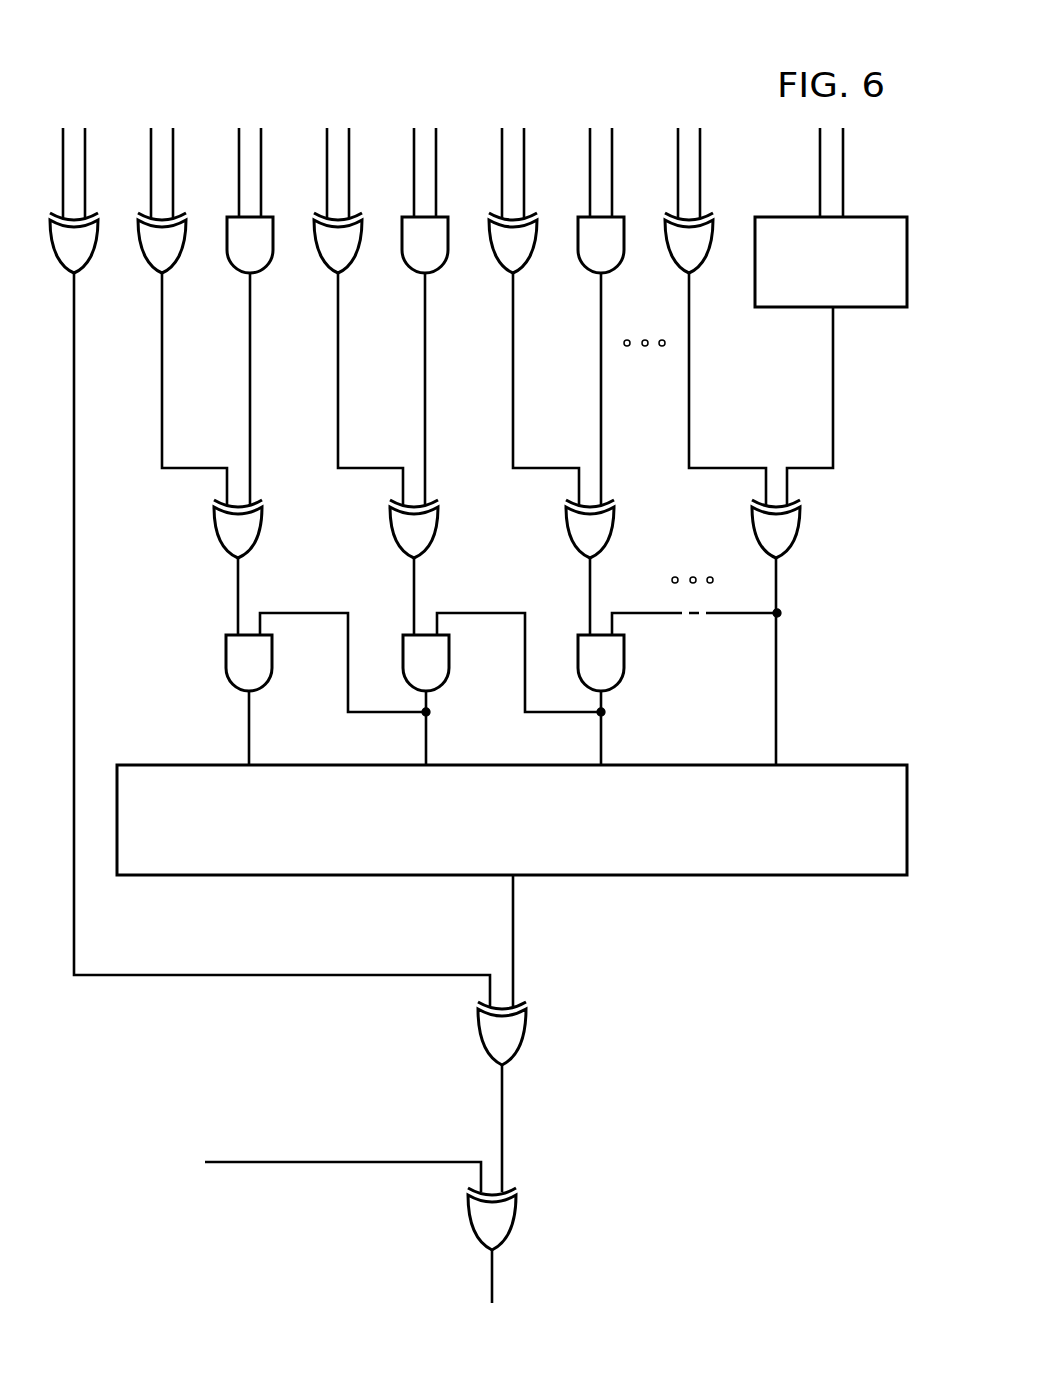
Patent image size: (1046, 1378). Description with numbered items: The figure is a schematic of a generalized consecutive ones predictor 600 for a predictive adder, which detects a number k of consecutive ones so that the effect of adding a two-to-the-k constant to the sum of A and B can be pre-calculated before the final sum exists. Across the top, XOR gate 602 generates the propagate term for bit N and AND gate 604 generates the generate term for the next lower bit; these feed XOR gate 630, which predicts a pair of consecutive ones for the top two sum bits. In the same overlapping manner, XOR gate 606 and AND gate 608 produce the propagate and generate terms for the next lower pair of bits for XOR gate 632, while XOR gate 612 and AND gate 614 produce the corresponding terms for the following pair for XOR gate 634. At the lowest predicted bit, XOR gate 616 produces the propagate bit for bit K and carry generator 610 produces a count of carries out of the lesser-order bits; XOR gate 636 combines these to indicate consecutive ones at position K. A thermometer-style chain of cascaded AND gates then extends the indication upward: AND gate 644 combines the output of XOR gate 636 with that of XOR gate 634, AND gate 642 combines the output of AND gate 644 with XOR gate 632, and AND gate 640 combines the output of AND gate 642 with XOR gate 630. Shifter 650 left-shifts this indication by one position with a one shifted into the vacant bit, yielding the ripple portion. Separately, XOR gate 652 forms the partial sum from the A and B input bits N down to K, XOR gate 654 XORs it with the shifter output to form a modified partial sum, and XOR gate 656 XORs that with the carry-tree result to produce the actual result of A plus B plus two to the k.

The generalized consecutive ones predictor 600 is at (257, 93).
The XOR gate 602 is at (139, 262).
The AND gate 604 is at (228, 262).
The XOR gate 606 is at (316, 262).
The AND gate 608 is at (447, 262).
The carry generator 610 is at (863, 308).
The XOR gate 612 is at (536, 262).
The AND gate 614 is at (623, 262).
The XOR gate 616 is at (711, 262).
The XOR gate 630 is at (214, 526).
The XOR gate 632 is at (390, 526).
The XOR gate 634 is at (614, 526).
The XOR gate 636 is at (800, 526).
The AND gate 640 is at (227, 680).
The AND gate 642 is at (448, 680).
The AND gate 644 is at (623, 680).
The shifter 650 is at (847, 876).
The XOR gate 652 is at (51, 262).
The XOR gate 654 is at (479, 1030).
The XOR gate 656 is at (469, 1217).